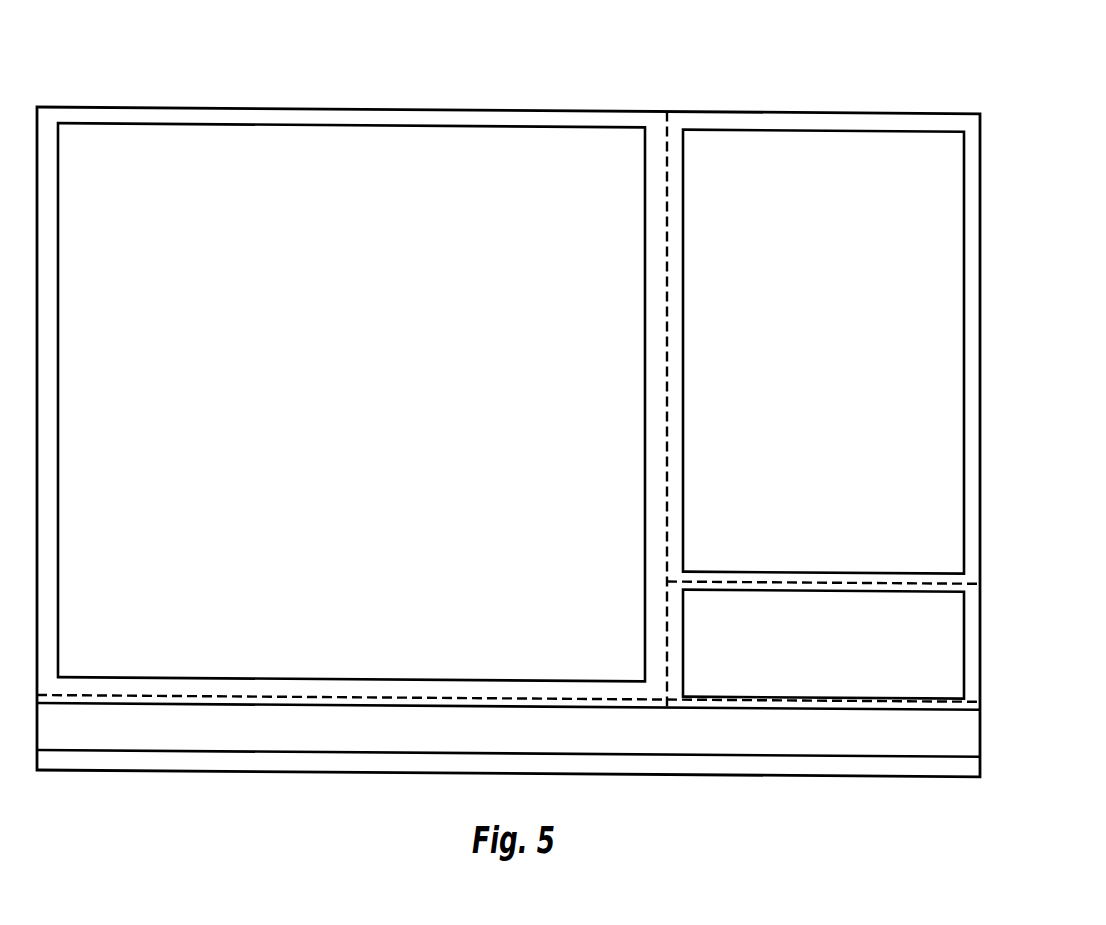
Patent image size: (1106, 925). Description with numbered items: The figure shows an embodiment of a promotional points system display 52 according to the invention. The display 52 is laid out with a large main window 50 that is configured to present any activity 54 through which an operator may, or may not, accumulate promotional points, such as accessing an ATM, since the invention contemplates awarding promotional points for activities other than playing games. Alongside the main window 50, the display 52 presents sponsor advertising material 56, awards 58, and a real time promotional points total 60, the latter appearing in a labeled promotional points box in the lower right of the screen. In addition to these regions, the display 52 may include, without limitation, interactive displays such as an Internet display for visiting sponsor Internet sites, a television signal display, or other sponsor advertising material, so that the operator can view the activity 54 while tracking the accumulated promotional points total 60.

The main window 50 is at (652, 123).
The display 52 is at (725, 93).
The activity 54 is at (344, 390).
The sponsor advertising material 56 is at (524, 743).
The awards 58 is at (834, 336).
The real time promotional points total 60 is at (948, 641).